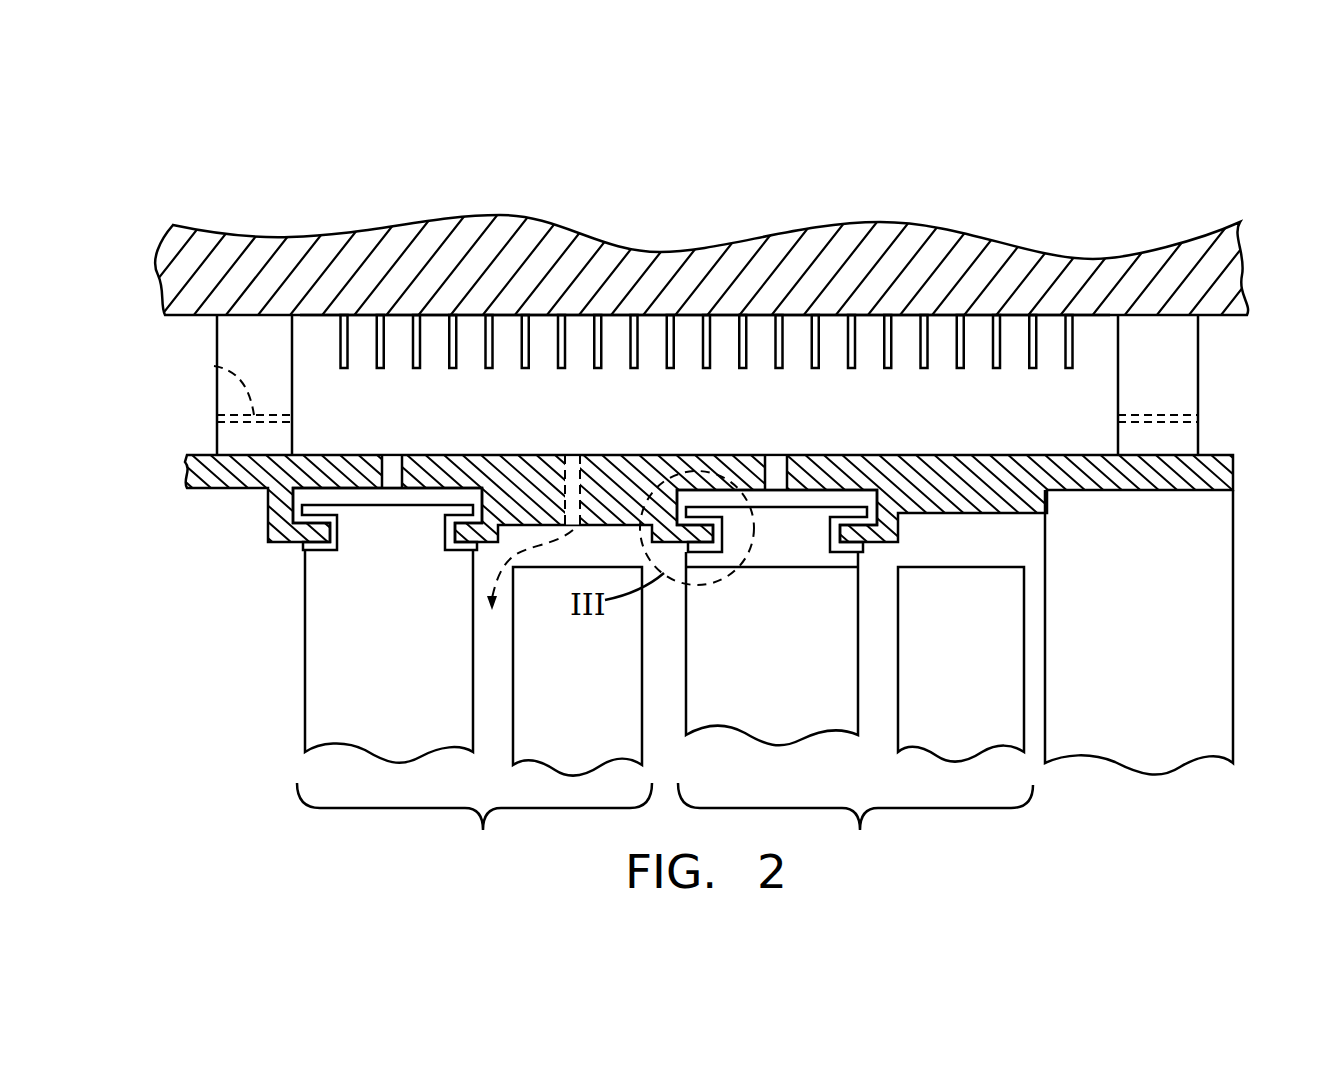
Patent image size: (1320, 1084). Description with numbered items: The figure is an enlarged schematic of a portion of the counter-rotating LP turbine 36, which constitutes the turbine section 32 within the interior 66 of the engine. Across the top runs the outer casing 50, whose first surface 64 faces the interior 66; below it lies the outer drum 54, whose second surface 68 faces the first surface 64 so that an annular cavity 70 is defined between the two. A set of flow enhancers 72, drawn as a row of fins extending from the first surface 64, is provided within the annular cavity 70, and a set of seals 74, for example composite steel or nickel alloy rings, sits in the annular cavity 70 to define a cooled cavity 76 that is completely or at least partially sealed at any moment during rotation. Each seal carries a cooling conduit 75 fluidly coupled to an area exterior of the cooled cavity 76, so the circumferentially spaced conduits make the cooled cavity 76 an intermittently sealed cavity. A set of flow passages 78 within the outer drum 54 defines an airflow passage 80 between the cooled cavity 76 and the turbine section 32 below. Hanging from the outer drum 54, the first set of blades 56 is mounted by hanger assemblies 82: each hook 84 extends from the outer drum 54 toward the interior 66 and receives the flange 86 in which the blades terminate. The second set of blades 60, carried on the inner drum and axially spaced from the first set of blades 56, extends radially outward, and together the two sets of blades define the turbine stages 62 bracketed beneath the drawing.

The turbine section 32 is at (318, 128).
The counter-rotating LP turbine 36 is at (1032, 776).
The outer casing 50 is at (592, 250).
The outer drum 54 is at (1185, 485).
The first set of blades 56 is at (393, 618).
The second set of blades 60 is at (583, 652).
The turbine stages 62 is at (480, 830).
The first surface 64 is at (314, 316).
The interior 66 is at (173, 670).
The second surface 68 is at (1035, 455).
The annular cavity 70 is at (1080, 382).
The flow enhancers 72 is at (856, 328).
The set of seals 74 is at (252, 348).
The cooling conduit 75 is at (214, 366).
The cooled cavity 76 is at (722, 410).
The flow passages 78 is at (383, 476).
The airflow passage 80 is at (571, 445).
The hanger assembly 82 is at (255, 535).
The hook 84 is at (307, 527).
The flange 86 is at (312, 508).